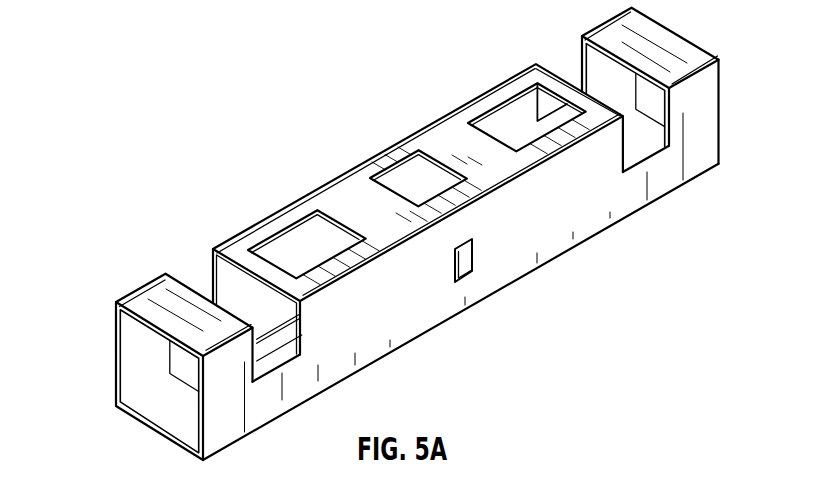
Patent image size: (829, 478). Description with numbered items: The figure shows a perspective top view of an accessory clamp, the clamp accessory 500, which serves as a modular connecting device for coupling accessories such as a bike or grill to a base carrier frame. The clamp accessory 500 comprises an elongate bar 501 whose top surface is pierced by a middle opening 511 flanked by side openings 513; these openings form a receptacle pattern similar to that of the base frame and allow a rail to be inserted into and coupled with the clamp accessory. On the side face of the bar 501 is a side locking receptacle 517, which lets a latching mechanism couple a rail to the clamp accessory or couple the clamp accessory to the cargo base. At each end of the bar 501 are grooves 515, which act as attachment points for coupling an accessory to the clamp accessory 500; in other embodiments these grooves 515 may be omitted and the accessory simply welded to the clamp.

The clamp accessory 500 is at (152, 185).
The bar 501 is at (329, 181).
The middle opening 511 is at (413, 178).
The side openings 513 is at (287, 251).
The grooves 515 is at (194, 270).
The side locking receptacle 517 is at (474, 270).